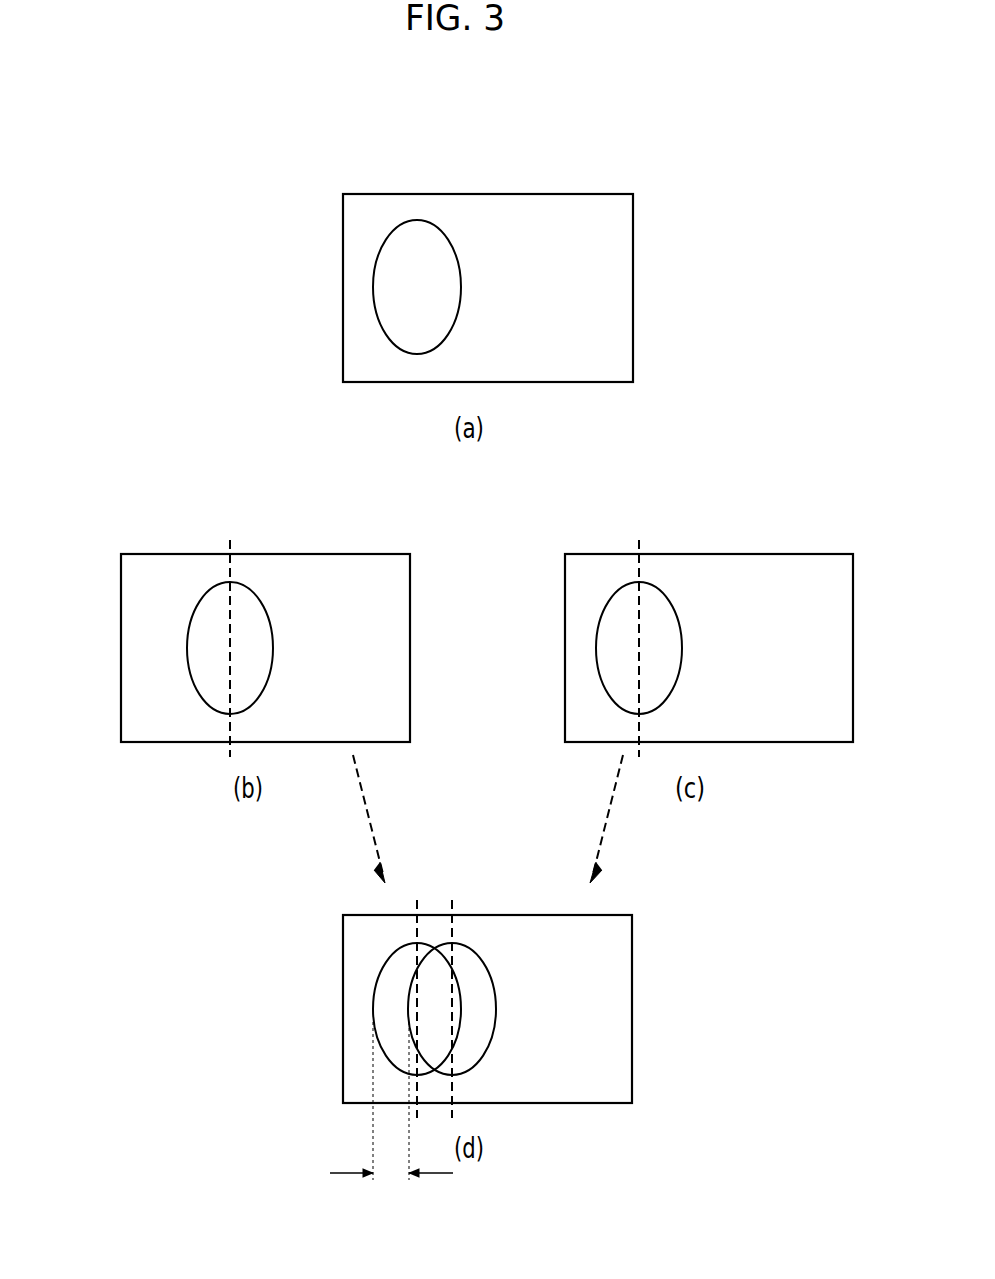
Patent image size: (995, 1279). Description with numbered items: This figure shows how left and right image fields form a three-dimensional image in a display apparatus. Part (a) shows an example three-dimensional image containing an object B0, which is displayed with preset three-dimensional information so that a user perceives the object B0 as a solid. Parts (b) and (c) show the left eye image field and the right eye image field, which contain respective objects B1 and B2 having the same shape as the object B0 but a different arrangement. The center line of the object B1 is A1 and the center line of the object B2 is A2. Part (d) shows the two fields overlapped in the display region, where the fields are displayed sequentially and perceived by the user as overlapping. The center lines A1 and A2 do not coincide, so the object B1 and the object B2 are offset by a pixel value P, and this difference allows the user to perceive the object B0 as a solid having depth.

The object B0 is at (373, 288).
The object of the left eye image field B1 is at (187, 648).
The object of the right eye image field B2 is at (597, 648).
The center line of the object B1 A1 is at (341, 815).
The center line of the object B2 A2 is at (528, 815).
The pixel value P is at (391, 1112).